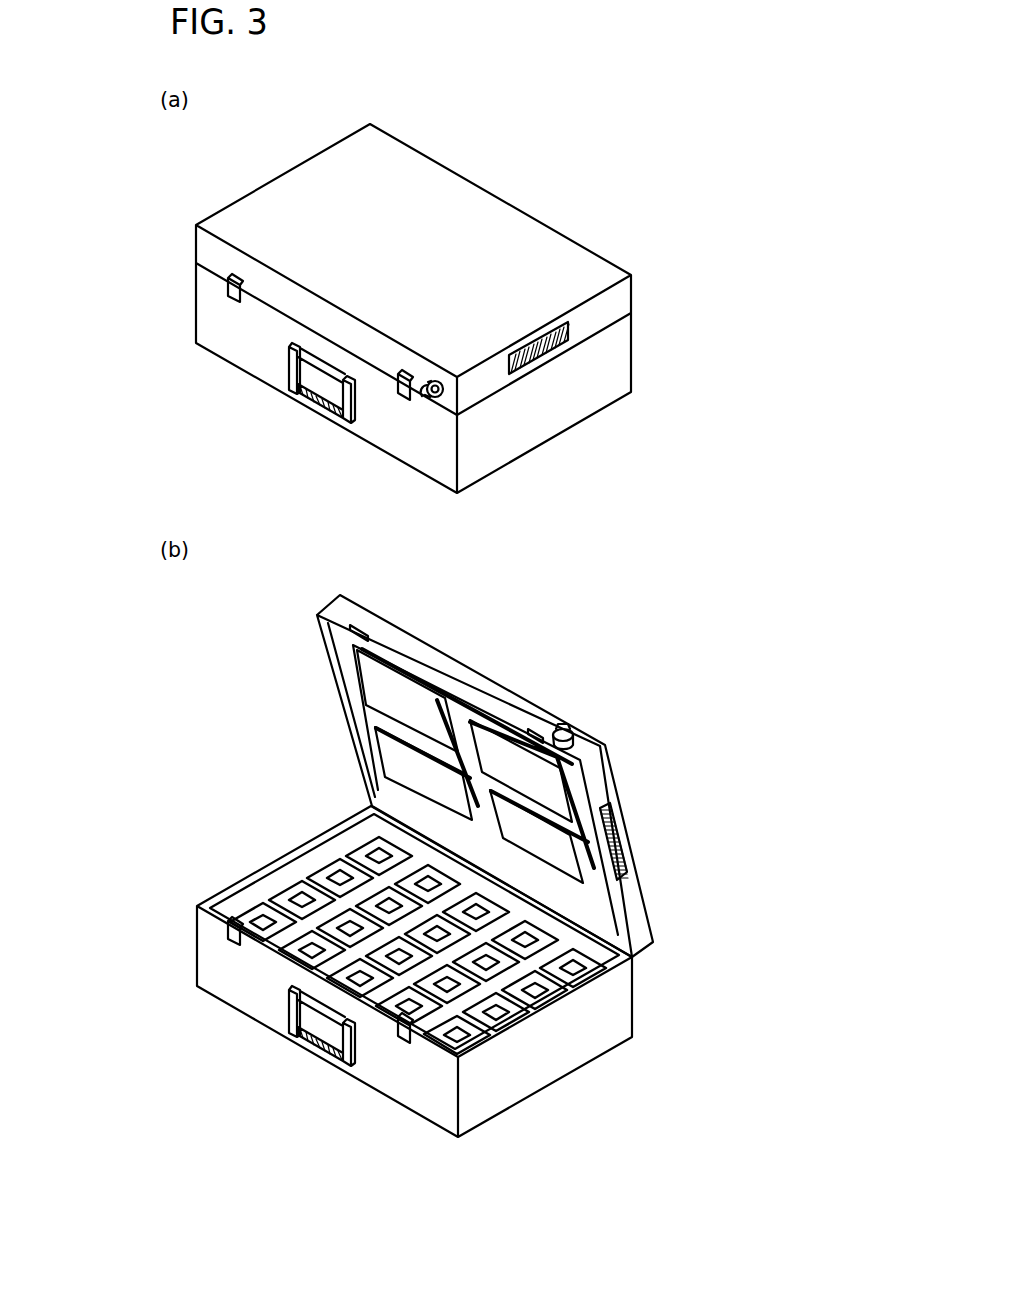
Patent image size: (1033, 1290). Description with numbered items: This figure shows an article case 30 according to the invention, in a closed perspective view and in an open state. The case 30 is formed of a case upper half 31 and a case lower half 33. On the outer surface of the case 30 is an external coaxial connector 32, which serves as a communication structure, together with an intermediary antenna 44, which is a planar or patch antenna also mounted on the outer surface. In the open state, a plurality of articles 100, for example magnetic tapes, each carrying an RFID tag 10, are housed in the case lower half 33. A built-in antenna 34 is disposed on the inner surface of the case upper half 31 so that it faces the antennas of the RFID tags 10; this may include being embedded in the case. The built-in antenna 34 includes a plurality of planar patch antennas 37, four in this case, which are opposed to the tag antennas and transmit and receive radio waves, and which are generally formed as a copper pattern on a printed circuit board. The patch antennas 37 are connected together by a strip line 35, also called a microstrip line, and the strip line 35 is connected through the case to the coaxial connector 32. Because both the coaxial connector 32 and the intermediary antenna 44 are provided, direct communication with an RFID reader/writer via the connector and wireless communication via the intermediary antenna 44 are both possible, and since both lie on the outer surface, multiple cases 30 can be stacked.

The case 30 is at (431, 623).
The case upper half 31 is at (662, 277).
The case lower half 33 is at (622, 353).
The external coaxial connector 32 is at (437, 398).
The intermediary antenna 44 is at (550, 350).
The built-in antenna 34 is at (579, 746).
The patch antenna 37 is at (503, 747).
The strip line 35 is at (612, 872).
The RFID tag 10 is at (342, 872).
The article 100 is at (330, 919).